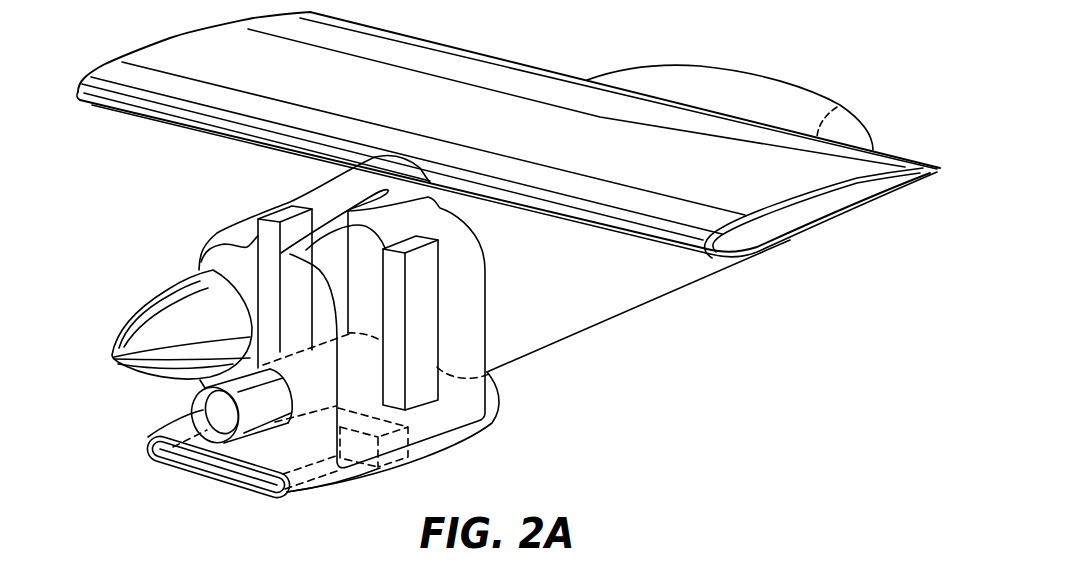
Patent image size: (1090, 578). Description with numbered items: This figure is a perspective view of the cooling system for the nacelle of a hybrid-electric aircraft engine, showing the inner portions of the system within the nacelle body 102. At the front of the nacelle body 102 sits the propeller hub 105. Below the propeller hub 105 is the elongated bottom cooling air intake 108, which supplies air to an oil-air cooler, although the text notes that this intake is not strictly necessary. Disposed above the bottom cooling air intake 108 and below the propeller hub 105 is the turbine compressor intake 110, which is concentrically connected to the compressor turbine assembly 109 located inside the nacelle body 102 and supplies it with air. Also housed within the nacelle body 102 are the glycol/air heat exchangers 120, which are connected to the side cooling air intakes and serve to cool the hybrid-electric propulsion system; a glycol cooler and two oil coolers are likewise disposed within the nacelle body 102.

The nacelle body 102 is at (508, 352).
The propeller hub 105 is at (121, 330).
The bottom cooling air intake 108 is at (203, 468).
The compressor turbine assembly 109 is at (300, 405).
The turbine compressor intake 110 is at (197, 408).
The glycol/air heat exchanger 120 is at (420, 345).